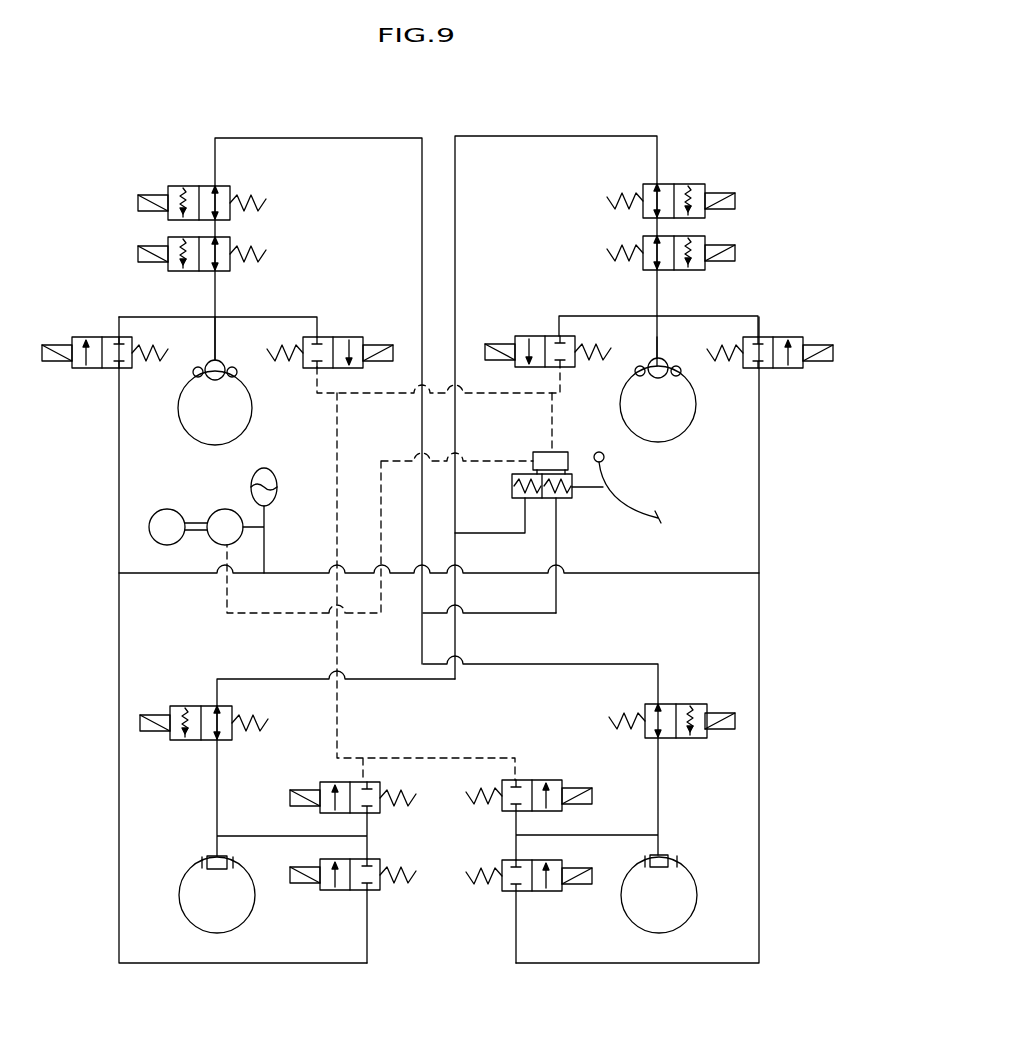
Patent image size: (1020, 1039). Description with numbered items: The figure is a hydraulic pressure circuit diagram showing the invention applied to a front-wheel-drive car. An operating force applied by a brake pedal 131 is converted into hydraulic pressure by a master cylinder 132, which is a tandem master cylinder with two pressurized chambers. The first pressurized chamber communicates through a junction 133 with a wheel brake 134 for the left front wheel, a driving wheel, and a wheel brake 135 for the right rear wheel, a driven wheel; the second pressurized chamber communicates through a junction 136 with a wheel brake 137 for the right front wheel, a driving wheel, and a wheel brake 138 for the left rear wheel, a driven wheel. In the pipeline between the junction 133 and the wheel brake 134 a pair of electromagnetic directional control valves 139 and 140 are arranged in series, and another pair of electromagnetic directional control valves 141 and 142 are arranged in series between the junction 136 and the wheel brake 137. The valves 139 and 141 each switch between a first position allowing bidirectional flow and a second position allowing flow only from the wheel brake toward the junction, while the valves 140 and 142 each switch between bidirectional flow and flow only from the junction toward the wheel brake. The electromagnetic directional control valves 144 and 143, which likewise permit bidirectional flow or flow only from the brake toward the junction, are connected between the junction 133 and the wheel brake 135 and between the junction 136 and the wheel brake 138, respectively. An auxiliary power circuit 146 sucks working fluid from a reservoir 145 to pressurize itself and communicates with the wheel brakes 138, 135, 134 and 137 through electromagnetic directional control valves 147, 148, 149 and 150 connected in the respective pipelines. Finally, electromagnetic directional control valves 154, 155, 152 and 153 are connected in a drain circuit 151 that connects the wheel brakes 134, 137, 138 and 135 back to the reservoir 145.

The brake pedal 131 is at (622, 495).
The master cylinder 132 is at (512, 487).
The junction 133 is at (423, 613).
The wheel brake 134 is at (223, 361).
The wheel brake 135 is at (667, 855).
The junction 136 is at (455, 533).
The wheel brake 137 is at (670, 363).
The wheel brake 138 is at (208, 856).
The electromagnetic directional control valve 139 is at (188, 186).
The electromagnetic directional control valve 140 is at (190, 270).
The electromagnetic directional control valve 141 is at (694, 184).
The electromagnetic directional control valve 142 is at (693, 270).
The electromagnetic directional control valve 143 is at (188, 706).
The electromagnetic directional control valve 144 is at (695, 704).
The reservoir 145 is at (568, 452).
The auxiliary power circuit 146 is at (120, 632).
The electromagnetic directional control valve 147 is at (342, 890).
The electromagnetic directional control valve 148 is at (502, 892).
The electromagnetic directional control valve 149 is at (100, 337).
The electromagnetic directional control valve 150 is at (790, 337).
The drain circuit 151 is at (337, 433).
The electromagnetic directional control valve 152 is at (318, 782).
The electromagnetic directional control valve 153 is at (556, 780).
The electromagnetic directional control valve 154 is at (364, 337).
The electromagnetic directional control valve 155 is at (535, 336).